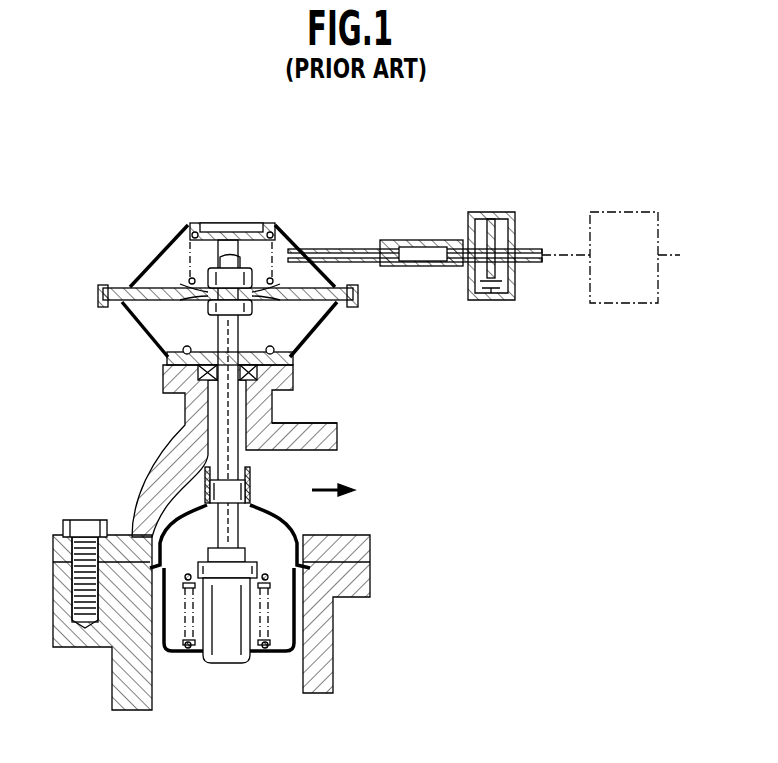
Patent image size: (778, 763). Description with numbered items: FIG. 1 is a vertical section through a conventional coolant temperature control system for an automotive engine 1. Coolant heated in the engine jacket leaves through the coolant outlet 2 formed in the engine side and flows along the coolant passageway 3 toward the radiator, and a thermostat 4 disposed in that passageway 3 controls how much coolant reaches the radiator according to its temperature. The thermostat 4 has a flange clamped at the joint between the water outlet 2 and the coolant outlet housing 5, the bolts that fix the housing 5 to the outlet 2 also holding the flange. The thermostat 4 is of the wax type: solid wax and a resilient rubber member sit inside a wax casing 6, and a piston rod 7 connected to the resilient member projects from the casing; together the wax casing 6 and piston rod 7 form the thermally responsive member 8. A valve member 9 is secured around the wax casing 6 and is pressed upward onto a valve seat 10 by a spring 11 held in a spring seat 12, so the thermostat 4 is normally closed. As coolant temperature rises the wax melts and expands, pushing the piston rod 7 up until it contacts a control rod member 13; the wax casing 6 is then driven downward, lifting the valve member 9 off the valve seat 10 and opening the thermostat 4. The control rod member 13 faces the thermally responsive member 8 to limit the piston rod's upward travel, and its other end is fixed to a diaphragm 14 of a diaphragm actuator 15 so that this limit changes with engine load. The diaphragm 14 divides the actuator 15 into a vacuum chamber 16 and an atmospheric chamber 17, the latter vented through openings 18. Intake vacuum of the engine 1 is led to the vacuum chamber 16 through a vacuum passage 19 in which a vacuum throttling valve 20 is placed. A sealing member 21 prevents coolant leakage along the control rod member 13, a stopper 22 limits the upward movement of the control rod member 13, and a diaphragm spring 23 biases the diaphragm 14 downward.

The engine 1 is at (643, 210).
The coolant outlet 2 is at (327, 690).
The coolant passageway 3 is at (327, 468).
The thermostat 4 is at (285, 526).
The coolant outlet housing 5 is at (163, 457).
The wax casing 6 is at (242, 667).
The piston rod 7 is at (222, 530).
The thermally responsive member 8 is at (222, 666).
The valve member 9 is at (180, 575).
The valve seat 10 is at (165, 535).
The spring 11 is at (197, 655).
The spring seat 12 is at (132, 655).
The control rod member 13 is at (223, 405).
The diaphragm 14 is at (140, 300).
The diaphragm actuator 15 is at (147, 257).
The vacuum chamber 16 is at (182, 255).
The atmospheric chamber 17 is at (160, 322).
The openings 18 is at (320, 325).
The vacuum passage 19 is at (580, 253).
The vacuum throttling valve 20 is at (503, 211).
The sealing member 21 is at (257, 373).
The stopper 22 is at (233, 230).
The diaphragm spring 23 is at (287, 240).